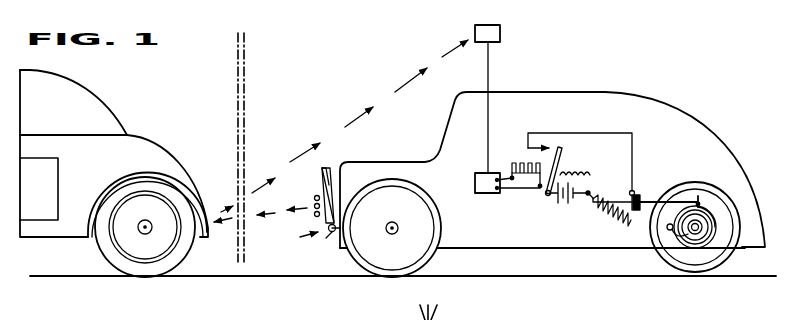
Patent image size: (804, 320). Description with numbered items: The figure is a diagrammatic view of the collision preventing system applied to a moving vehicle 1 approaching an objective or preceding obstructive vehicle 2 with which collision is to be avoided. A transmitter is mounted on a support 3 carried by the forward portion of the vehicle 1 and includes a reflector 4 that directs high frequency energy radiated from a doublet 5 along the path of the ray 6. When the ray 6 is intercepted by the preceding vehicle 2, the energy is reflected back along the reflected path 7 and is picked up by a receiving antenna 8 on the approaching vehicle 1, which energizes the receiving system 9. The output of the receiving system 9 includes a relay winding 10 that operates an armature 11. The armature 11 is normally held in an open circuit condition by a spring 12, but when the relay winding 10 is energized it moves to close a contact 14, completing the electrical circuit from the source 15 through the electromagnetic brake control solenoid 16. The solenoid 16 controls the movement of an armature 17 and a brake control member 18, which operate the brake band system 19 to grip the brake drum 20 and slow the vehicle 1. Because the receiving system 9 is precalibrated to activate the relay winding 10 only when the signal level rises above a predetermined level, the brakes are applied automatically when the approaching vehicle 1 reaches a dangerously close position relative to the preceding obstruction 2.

The vehicle 1 is at (677, 125).
The preceding obstructive vehicle 2 is at (130, 148).
The support 3 is at (326, 239).
The reflector 4 is at (337, 163).
The doublet 5 is at (310, 170).
The path of the ray 6 is at (267, 222).
The reflected path 7 is at (357, 113).
The receiving antenna 8 is at (500, 35).
The receiving system 9 is at (480, 197).
The relay winding 10 is at (525, 182).
The armature 11 is at (562, 141).
The spring 12 is at (573, 171).
The contact 14 is at (546, 145).
The source 15 is at (562, 205).
The electromagnetic brake control solenoid 16 is at (619, 185).
The armature 17 is at (633, 209).
The brake control member 18 is at (650, 208).
The brake band system 19 is at (713, 213).
The brake drum 20 is at (700, 237).